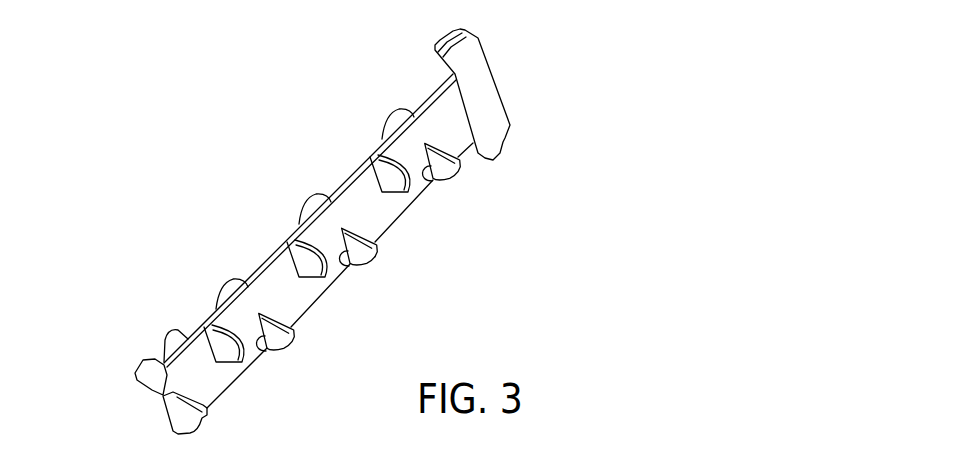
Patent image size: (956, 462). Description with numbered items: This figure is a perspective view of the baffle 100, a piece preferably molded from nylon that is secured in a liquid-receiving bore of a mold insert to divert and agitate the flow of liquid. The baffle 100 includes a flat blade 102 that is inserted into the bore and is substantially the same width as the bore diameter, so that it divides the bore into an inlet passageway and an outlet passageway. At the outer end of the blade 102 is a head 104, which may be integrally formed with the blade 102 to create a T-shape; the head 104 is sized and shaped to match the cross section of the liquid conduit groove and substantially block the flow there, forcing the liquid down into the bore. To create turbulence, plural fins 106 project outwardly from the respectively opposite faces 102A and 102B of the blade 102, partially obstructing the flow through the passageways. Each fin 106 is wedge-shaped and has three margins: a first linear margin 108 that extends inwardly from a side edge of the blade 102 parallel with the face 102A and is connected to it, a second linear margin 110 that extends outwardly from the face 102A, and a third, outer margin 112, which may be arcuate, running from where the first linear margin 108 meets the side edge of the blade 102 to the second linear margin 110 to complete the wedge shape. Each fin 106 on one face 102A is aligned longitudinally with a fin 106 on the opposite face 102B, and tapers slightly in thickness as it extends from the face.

The baffle 100 is at (522, 170).
The blade 102 is at (338, 171).
The face of the blade 102A is at (377, 205).
The opposite face of the blade 102B is at (165, 333).
The head 104 is at (485, 92).
The fins 106 is at (145, 375).
The first linear margin 108 is at (345, 263).
The second linear margin 110 is at (367, 232).
The third outer margin 112 is at (362, 258).